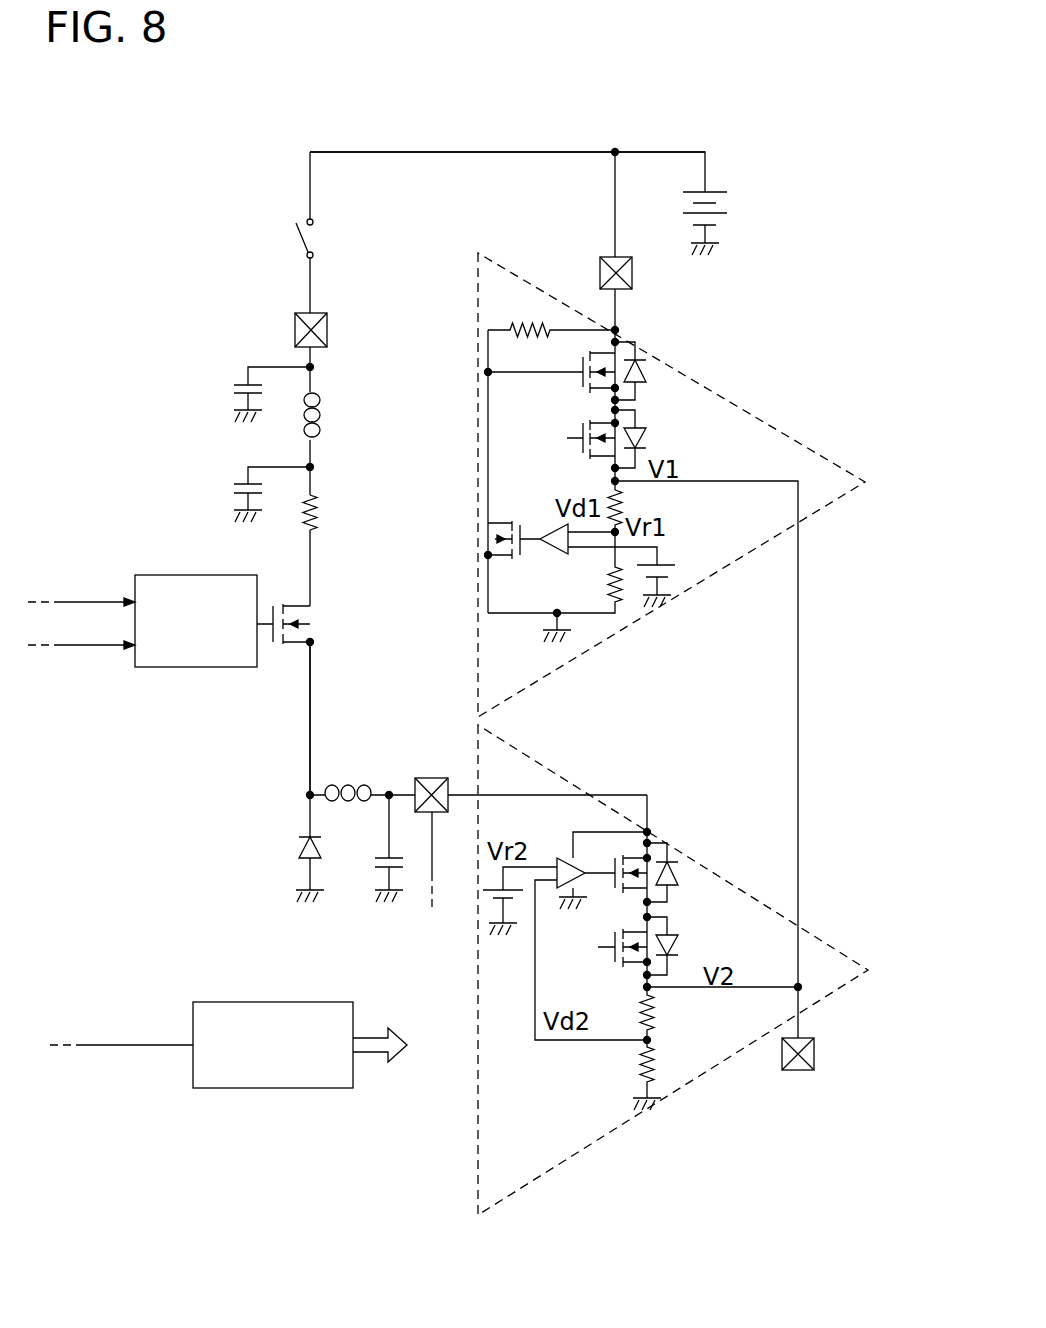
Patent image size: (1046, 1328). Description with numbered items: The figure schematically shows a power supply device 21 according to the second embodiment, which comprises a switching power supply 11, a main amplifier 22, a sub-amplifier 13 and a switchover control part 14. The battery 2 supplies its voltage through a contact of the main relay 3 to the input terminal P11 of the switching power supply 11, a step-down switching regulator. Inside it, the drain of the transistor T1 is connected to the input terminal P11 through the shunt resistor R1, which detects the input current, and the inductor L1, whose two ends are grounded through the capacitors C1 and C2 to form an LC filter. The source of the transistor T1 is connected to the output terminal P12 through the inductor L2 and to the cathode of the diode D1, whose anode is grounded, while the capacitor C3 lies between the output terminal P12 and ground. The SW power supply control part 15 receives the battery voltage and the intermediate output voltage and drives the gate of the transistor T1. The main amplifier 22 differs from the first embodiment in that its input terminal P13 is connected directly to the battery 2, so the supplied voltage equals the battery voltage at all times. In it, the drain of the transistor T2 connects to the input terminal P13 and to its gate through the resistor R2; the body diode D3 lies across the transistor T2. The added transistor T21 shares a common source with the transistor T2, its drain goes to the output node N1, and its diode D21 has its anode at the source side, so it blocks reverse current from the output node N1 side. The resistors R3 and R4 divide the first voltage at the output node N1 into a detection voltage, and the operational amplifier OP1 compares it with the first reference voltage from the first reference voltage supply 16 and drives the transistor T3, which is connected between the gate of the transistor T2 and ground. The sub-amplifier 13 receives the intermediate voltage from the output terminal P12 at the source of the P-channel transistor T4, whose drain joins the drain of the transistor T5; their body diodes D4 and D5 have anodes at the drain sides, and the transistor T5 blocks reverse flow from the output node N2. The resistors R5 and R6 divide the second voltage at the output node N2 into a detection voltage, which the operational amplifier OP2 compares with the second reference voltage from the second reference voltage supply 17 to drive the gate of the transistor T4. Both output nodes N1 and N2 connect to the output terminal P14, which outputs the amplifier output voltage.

The battery 2 is at (730, 190).
The main relay 3 is at (299, 218).
The switching power supply 11 is at (183, 772).
The sub-amplifier 13 is at (575, 1157).
The switchover control part 14 is at (252, 1002).
The SW power supply control part 15 is at (190, 575).
The first reference voltage supply 16 is at (688, 576).
The second reference voltage supply 17 is at (530, 898).
The power supply device 21 is at (449, 128).
The main amplifier 22 is at (690, 376).
The input terminal P11 is at (293, 334).
The output terminal P12 is at (415, 785).
The input terminal P13 is at (597, 278).
The output terminal P14 is at (814, 1048).
The capacitor C1 is at (232, 390).
The capacitor C2 is at (232, 480).
The capacitor C3 is at (377, 867).
The inductor L1 is at (332, 413).
The inductor L2 is at (352, 810).
The resistor R1 is at (322, 517).
The resistor R2 is at (530, 322).
The resistor R3 is at (632, 512).
The resistor R4 is at (606, 580).
The resistor R5 is at (657, 1008).
The resistor R6 is at (636, 1063).
The transistor T1 is at (312, 616).
The transistor T2 is at (577, 388).
The transistor T21 is at (574, 448).
The transistor T3 is at (501, 566).
The transistor T4 is at (624, 892).
The transistor T5 is at (617, 967).
The diode D1 is at (294, 842).
The body diode D3 is at (648, 372).
The diode D21 is at (650, 443).
The body diode D4 is at (680, 868).
The body diode D5 is at (680, 953).
The operational amplifier OP1 is at (557, 528).
The operational amplifier OP2 is at (558, 857).
The output node N1 is at (620, 486).
The output node N2 is at (650, 990).